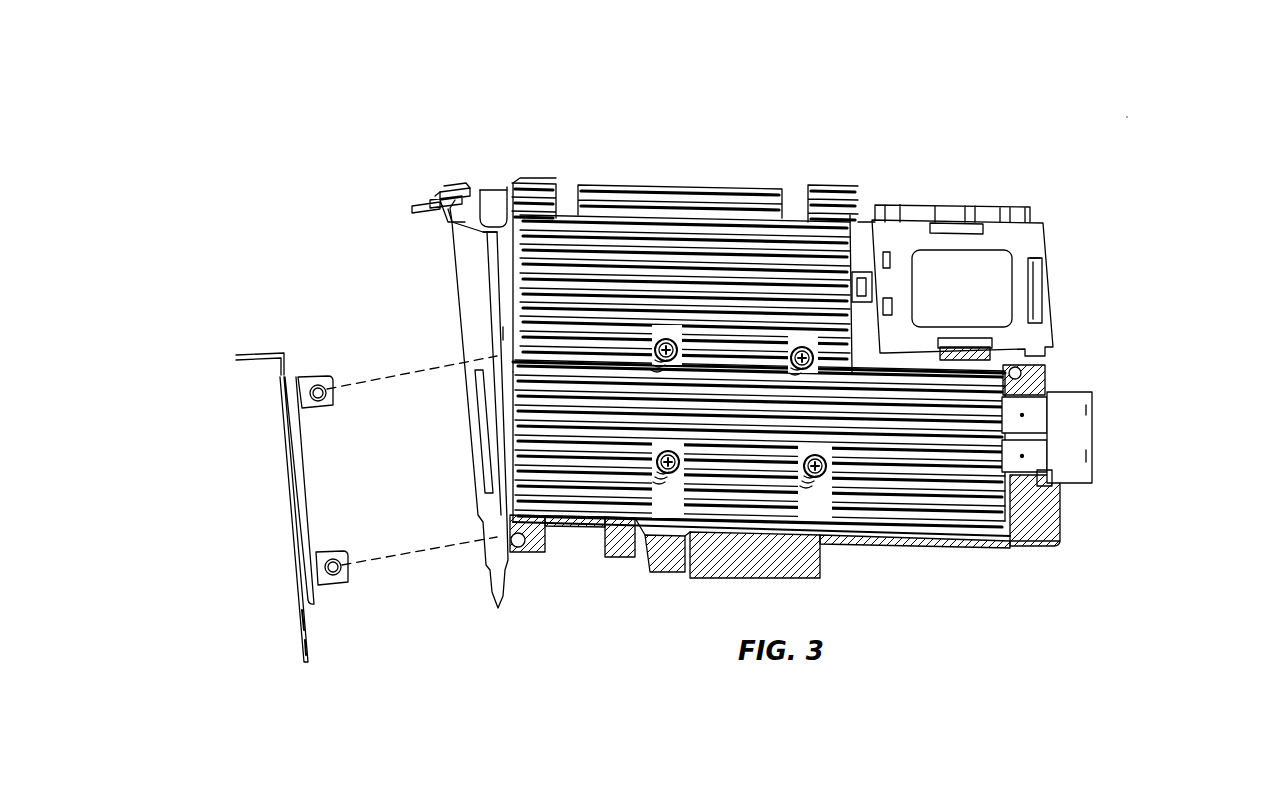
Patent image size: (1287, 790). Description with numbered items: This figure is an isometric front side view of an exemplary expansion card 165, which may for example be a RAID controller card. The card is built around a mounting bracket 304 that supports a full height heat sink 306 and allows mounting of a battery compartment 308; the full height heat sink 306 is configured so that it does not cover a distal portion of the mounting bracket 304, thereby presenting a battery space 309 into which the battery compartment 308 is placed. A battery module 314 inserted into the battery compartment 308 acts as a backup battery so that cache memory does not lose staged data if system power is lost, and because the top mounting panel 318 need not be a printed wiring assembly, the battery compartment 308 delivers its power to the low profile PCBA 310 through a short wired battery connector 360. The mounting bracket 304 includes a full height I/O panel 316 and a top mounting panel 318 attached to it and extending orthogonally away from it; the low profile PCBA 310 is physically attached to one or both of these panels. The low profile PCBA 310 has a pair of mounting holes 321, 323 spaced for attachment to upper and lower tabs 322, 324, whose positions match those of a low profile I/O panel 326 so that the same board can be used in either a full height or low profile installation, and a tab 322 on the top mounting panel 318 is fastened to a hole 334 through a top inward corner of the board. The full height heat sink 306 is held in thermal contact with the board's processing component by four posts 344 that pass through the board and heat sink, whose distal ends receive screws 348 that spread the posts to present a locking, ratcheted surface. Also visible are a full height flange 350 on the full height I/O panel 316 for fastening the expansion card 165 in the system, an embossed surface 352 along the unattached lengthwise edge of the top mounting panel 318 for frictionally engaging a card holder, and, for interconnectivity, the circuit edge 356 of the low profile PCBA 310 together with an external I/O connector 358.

The expansion card 165 is at (1130, 114).
The mounting bracket 304 is at (491, 179).
The full height heat sink 306 is at (698, 182).
The battery compartment 308 is at (1037, 310).
The battery space 309 is at (862, 222).
The low profile PCBA 310 is at (1052, 548).
The battery module 314 is at (958, 298).
The full height I/O panel 316 is at (480, 512).
The top mounting panel 318 is at (498, 297).
The mounting hole 321 is at (503, 330).
The upper tab 322 is at (322, 380).
The mounting hole 323 is at (521, 546).
The lower tab 324 is at (343, 568).
The low profile I/O panel 326 is at (302, 640).
The hole 334 is at (1023, 370).
The posts 344 is at (810, 475).
The screws 348 is at (830, 472).
The full height flange 350 is at (447, 187).
The embossed surface 352 is at (890, 205).
The circuit edge 356 is at (808, 553).
The external I/O connector 358 is at (482, 430).
The wired battery connector 360 is at (957, 335).